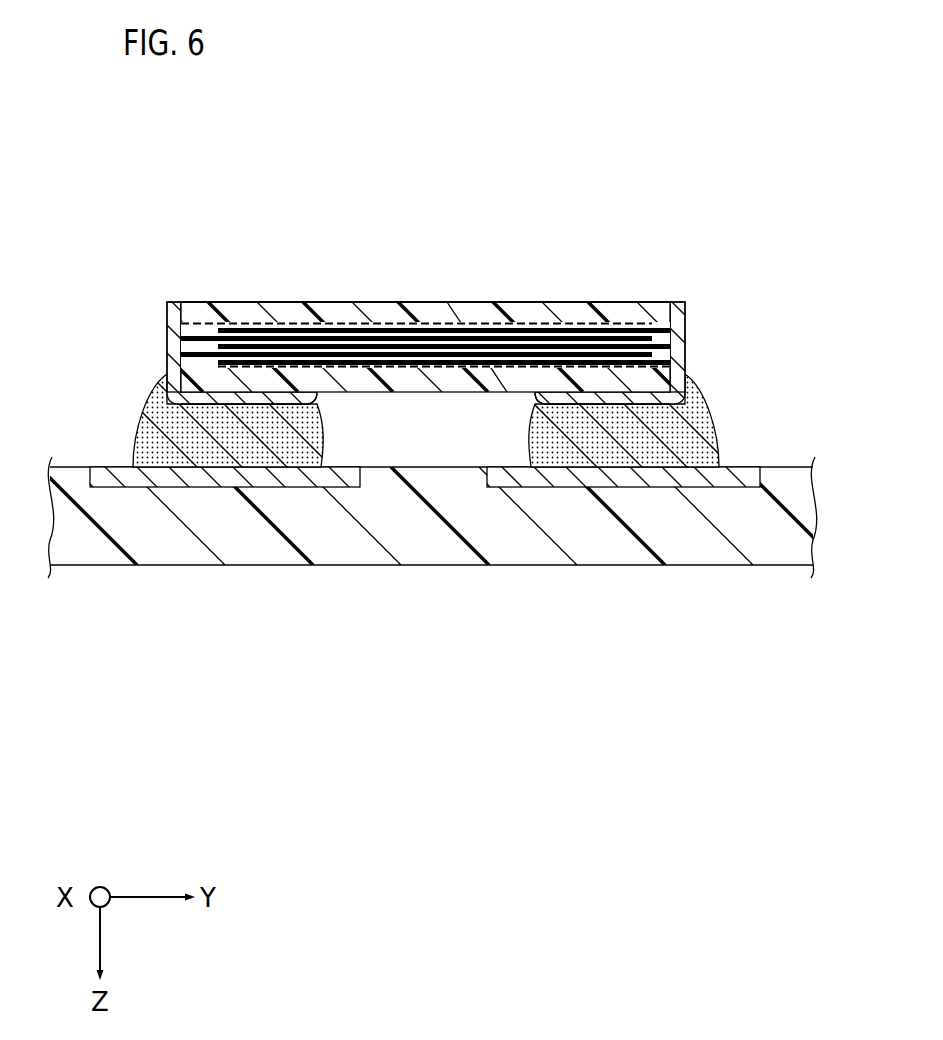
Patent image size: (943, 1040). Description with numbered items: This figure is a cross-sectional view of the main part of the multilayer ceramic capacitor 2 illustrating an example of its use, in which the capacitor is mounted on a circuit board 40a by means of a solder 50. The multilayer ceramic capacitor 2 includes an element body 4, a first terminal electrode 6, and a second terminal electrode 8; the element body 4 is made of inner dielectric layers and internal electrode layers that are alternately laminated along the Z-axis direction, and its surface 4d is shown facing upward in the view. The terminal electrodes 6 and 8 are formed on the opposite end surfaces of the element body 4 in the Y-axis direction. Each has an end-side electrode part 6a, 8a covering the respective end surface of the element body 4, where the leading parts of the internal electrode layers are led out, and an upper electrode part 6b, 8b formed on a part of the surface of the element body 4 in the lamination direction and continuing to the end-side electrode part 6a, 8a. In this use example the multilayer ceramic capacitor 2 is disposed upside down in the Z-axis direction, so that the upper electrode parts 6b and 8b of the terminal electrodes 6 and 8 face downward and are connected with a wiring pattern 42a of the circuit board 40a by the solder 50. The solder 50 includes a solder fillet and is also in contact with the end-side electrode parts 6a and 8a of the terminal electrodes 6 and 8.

The multilayer ceramic capacitor 2 is at (399, 411).
The element body 4 is at (386, 302).
The upper main surface of element body 4d is at (335, 302).
The first terminal electrode 6 is at (241, 440).
The end-side electrode part 6a is at (172, 302).
The upper electrode part 6b is at (260, 404).
The second terminal electrode 8 is at (623, 438).
The end-side electrode part 8a is at (687, 306).
The upper electrode part 8b is at (583, 402).
The circuit board 40a is at (747, 567).
The wiring pattern 42a is at (98, 478).
The solder 50 is at (140, 423).